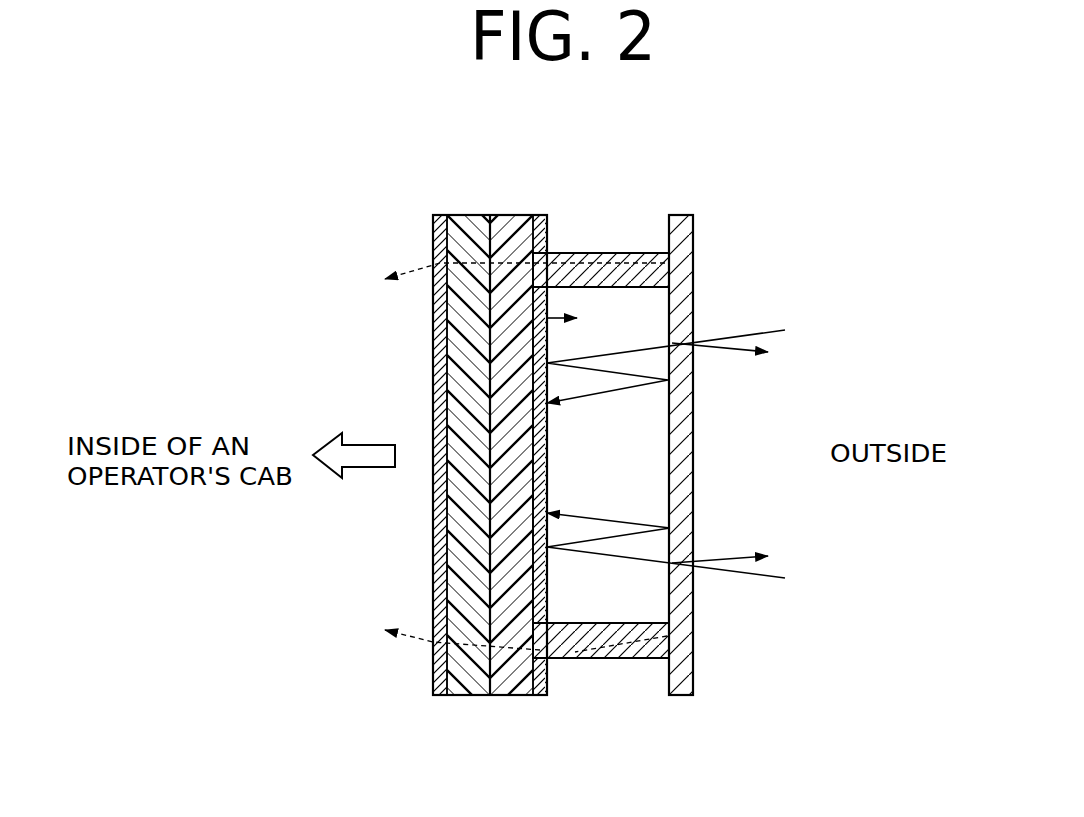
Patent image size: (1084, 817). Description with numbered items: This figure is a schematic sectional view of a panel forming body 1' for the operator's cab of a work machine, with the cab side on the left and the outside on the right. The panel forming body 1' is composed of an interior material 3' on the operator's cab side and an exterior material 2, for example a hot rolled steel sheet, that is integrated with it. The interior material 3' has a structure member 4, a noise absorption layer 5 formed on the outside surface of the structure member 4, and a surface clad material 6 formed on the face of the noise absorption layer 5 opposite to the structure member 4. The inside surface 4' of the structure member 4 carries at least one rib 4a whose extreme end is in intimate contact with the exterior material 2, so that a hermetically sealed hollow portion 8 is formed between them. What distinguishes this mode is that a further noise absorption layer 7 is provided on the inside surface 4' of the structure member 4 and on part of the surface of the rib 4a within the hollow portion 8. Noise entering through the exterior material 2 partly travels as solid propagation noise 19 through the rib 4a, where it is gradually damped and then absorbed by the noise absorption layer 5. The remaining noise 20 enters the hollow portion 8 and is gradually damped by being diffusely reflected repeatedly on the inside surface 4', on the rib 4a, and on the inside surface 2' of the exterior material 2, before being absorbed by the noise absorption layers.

The panel forming body 1' is at (609, 402).
The exterior material 2 is at (696, 489).
The inside surface of the exterior material 2' is at (714, 455).
The interior material 3' is at (468, 424).
The structure member 4 is at (451, 455).
The inside surface of the structure member 4' is at (455, 455).
The rib 4a is at (588, 253).
The noise absorption layer 5 is at (472, 697).
The surface clad material 6 is at (440, 668).
The noise absorption layer 7 is at (541, 697).
The hermetically sealed hollow portion 8 is at (530, 323).
The solid propagation noise 19 is at (625, 660).
The noise 20 is at (627, 515).